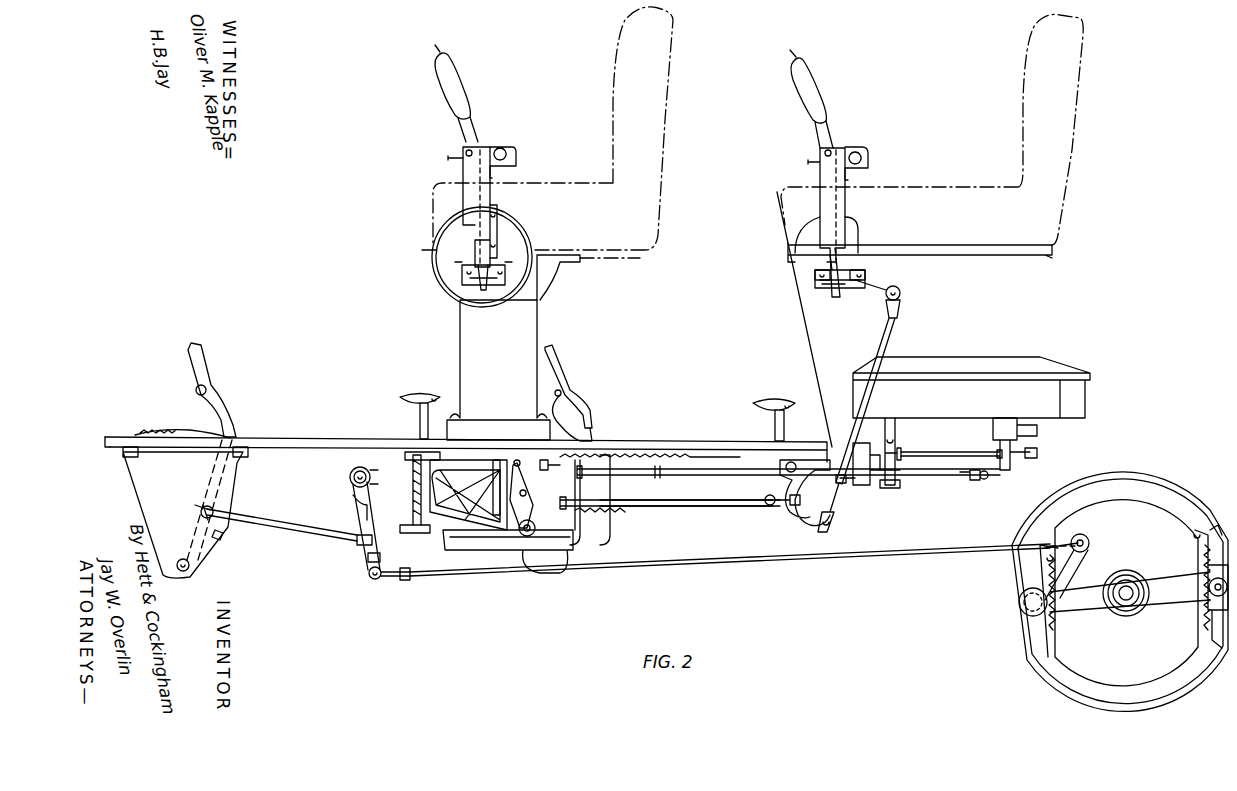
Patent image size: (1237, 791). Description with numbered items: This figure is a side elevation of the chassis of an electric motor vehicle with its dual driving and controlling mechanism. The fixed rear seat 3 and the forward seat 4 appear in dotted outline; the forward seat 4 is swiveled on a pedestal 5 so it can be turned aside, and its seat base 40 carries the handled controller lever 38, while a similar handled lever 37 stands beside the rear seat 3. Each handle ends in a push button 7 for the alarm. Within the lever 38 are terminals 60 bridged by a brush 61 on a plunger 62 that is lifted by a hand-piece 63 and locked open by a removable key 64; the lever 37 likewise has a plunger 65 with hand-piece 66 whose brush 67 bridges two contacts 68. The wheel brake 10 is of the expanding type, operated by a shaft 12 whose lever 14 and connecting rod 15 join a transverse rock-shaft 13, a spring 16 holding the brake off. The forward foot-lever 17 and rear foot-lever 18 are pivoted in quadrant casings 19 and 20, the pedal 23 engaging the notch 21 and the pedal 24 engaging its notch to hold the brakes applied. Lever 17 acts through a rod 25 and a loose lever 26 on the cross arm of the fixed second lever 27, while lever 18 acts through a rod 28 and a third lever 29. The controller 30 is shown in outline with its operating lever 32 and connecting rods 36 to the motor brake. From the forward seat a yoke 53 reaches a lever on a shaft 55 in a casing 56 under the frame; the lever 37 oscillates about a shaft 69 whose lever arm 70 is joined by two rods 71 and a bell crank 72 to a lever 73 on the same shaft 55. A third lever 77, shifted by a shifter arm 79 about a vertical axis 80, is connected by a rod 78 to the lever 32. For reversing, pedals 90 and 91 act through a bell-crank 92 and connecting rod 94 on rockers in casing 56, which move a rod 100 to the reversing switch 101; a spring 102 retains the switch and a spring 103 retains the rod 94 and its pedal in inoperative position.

The rear seat 3 is at (1023, 80).
The forward seat 4 is at (613, 80).
The pedestal 5 is at (460, 330).
The push buttons 7 is at (436, 50).
The wheel brake 10 is at (1117, 474).
The brake shaft 12 is at (1020, 608).
The transverse rock-shaft 13 is at (350, 472).
The lever 14 is at (1060, 560).
The connecting rod 15 is at (900, 556).
The spring 16 is at (1050, 572).
The forward foot-lever 17 is at (213, 473).
The rear foot-lever 18 is at (582, 414).
The quadrant casing 19 is at (130, 472).
The quadrant casing 20 is at (600, 483).
The notch 21 is at (140, 433).
The pedal 23 is at (212, 385).
The pedal 24 is at (572, 392).
The rod 25 is at (290, 535).
The lever 26 is at (357, 542).
The second lever 27 is at (352, 500).
The rod 28 is at (392, 578).
The third lever 29 is at (370, 563).
The controller 30 is at (1012, 362).
The operating lever 32 is at (993, 433).
The connecting rods 36 is at (967, 456).
The handled controller lever 37 is at (828, 125).
The handled controller lever 38 is at (474, 125).
The seat base 40 is at (565, 290).
The yoke 53 is at (493, 505).
The shaft 55 is at (532, 535).
The casing 56 is at (585, 527).
The terminals 60 is at (458, 263).
The brush 61 is at (462, 282).
The plunger 62 is at (498, 235).
The hand-piece 63 is at (512, 146).
The removable key 64 is at (448, 158).
The plunger 65 is at (810, 200).
The hand-piece 66 is at (868, 156).
The brush 67 is at (815, 288).
The contacts 68 is at (858, 272).
The shaft 69 is at (825, 263).
The lever arm 70 is at (880, 286).
The rods 71 is at (883, 335).
The bell crank 72 is at (805, 522).
The lever 73 is at (518, 500).
The third lever 77 is at (548, 468).
The rod 78 is at (632, 468).
The shifter arm 79 is at (471, 522).
The vertical axis 80 is at (421, 533).
The pedal 90 is at (772, 400).
The pedal 91 is at (415, 395).
The bell-crank 92 is at (790, 505).
The connecting rod 94 is at (712, 506).
The rod 100 is at (848, 483).
The reversing switch 101 is at (893, 470).
The spring 102 is at (686, 455).
The spring 103 is at (605, 512).